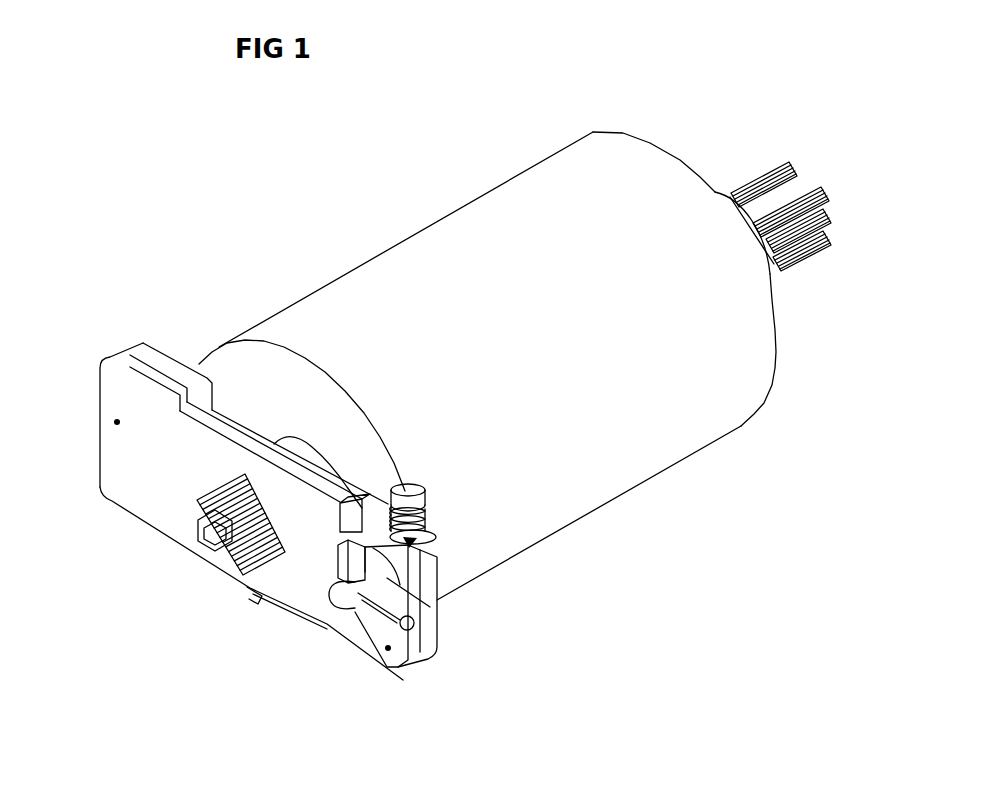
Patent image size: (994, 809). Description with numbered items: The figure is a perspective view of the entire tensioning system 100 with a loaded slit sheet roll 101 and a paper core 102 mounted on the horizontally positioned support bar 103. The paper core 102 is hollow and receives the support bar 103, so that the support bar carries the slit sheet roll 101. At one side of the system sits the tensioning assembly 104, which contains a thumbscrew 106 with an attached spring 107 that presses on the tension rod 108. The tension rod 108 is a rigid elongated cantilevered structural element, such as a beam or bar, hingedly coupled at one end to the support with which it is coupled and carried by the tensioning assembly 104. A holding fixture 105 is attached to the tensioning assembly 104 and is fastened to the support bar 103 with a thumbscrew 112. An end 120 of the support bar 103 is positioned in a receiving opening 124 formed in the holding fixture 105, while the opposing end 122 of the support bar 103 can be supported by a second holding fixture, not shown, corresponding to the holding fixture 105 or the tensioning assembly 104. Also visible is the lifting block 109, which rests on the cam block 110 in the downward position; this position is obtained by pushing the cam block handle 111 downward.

The tensioning system 100 is at (117, 306).
The slit sheet roll 101 is at (460, 204).
The paper core 102 is at (715, 192).
The support bar 103 is at (797, 165).
The opposing end of the support bar 122 is at (792, 258).
The tensioning assembly 104 is at (130, 345).
The holding fixture 105 is at (100, 487).
The thumbscrew 112 is at (247, 594).
The end of the support bar 120 is at (273, 562).
The receiving opening 124 is at (282, 530).
The thumbscrew 106 is at (438, 496).
The spring 107 is at (438, 520).
The tension rod 108 is at (432, 533).
The lifting block 109 is at (425, 609).
The cam block 110 is at (390, 670).
The cam block handle 111 is at (422, 643).